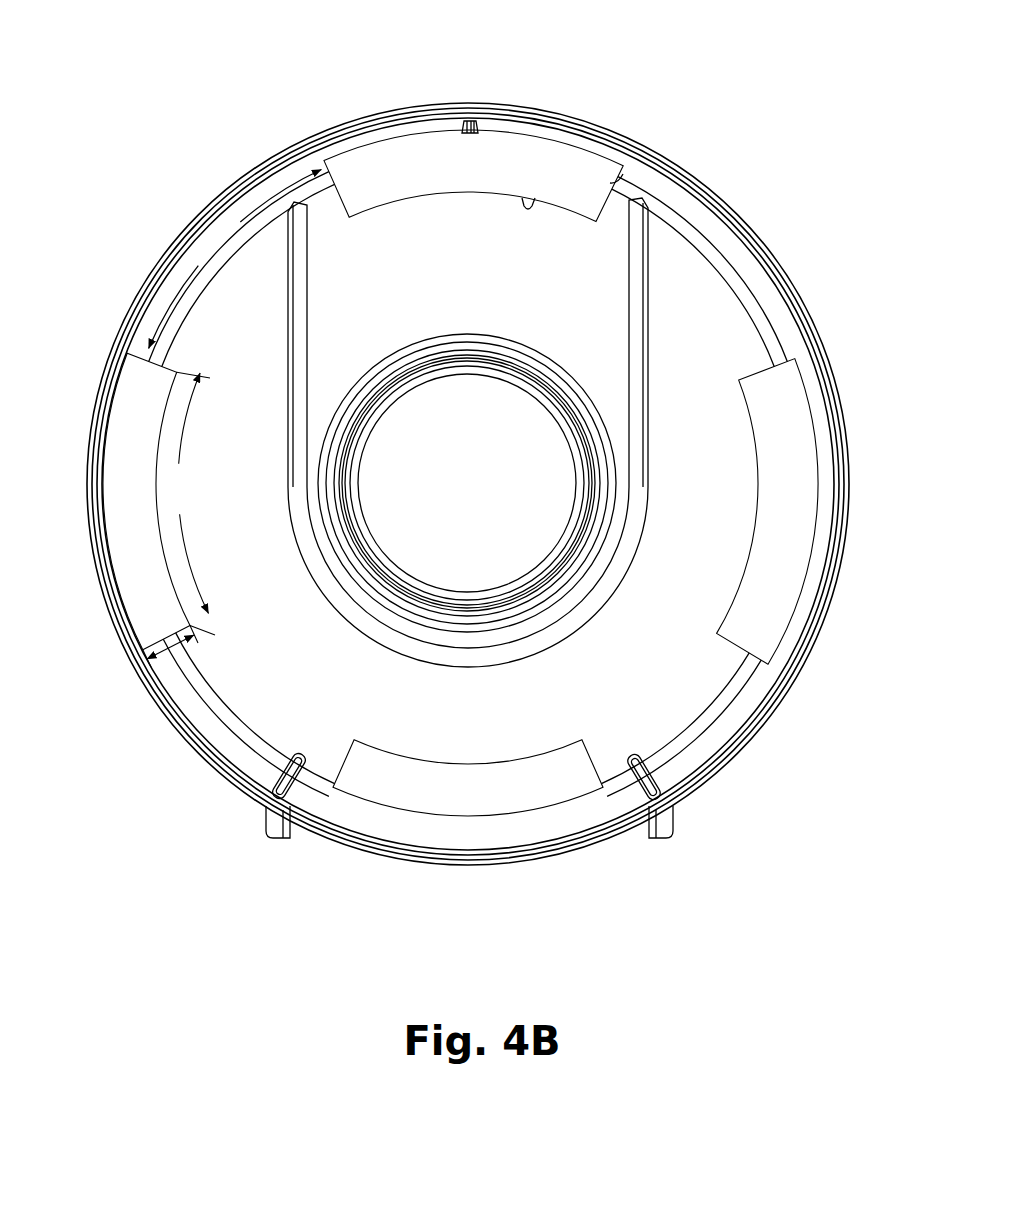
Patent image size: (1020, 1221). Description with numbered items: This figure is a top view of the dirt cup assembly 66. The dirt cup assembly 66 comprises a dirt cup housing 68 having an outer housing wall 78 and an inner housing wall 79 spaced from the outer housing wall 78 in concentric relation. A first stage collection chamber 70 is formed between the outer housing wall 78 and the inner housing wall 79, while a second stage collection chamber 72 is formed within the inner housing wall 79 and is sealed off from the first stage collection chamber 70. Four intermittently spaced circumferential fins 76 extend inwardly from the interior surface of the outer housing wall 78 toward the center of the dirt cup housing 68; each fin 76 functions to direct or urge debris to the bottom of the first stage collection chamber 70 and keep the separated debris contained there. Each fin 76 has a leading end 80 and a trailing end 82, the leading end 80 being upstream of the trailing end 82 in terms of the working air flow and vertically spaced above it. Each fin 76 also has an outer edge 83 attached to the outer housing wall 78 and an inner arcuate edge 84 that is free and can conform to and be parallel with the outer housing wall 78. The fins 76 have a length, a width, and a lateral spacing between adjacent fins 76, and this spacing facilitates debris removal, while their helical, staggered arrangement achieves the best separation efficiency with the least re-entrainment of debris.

The dirt cup assembly 66 is at (183, 95).
The dirt cup housing 68 is at (763, 238).
The first stage collection chamber 70 is at (232, 499).
The second stage collection chamber 72 is at (469, 476).
The circumferential fin 76 is at (378, 163).
The outer housing wall 78 is at (207, 715).
The inner housing wall 79 is at (563, 596).
The leading end 80 is at (324, 162).
The trailing end 82 is at (623, 178).
The outer edge 83 is at (420, 132).
The inner arcuate edge 84 is at (532, 205).